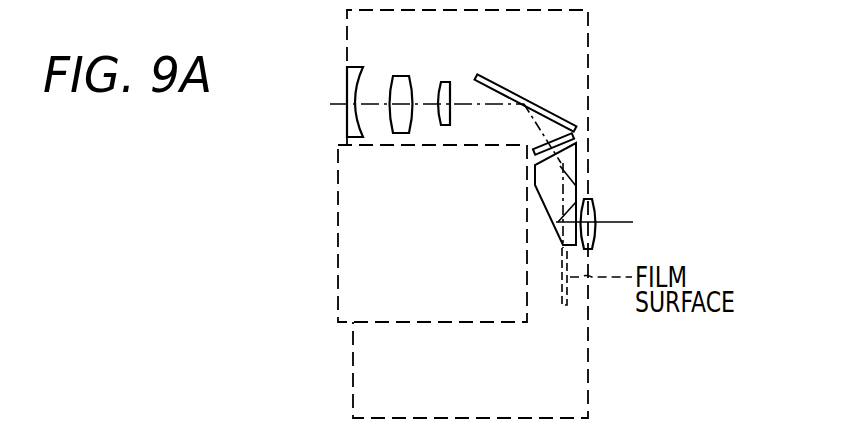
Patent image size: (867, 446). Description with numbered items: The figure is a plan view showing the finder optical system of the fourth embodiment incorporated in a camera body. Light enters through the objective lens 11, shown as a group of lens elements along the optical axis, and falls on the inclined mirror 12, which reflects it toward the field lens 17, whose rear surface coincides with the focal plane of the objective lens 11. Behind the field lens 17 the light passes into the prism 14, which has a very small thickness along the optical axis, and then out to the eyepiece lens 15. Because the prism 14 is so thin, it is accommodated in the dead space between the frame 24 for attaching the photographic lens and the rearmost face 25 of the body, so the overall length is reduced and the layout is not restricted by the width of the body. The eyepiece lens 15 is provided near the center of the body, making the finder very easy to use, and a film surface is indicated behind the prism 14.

The objective lens 11 is at (448, 61).
The mirror 12 is at (497, 82).
The field lens 17 is at (565, 130).
The prism 14 is at (567, 160).
The eyepiece lens 15 is at (595, 210).
The frame 24 is at (393, 325).
The rearmost face 25 is at (590, 371).